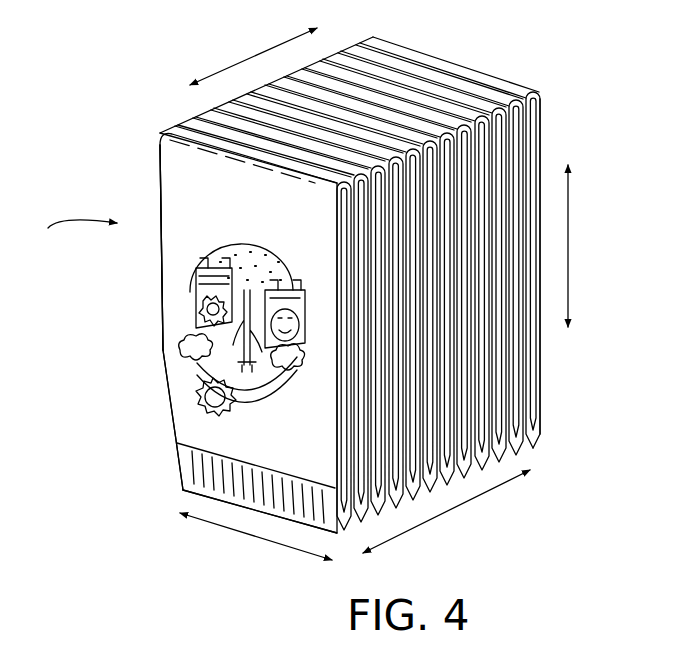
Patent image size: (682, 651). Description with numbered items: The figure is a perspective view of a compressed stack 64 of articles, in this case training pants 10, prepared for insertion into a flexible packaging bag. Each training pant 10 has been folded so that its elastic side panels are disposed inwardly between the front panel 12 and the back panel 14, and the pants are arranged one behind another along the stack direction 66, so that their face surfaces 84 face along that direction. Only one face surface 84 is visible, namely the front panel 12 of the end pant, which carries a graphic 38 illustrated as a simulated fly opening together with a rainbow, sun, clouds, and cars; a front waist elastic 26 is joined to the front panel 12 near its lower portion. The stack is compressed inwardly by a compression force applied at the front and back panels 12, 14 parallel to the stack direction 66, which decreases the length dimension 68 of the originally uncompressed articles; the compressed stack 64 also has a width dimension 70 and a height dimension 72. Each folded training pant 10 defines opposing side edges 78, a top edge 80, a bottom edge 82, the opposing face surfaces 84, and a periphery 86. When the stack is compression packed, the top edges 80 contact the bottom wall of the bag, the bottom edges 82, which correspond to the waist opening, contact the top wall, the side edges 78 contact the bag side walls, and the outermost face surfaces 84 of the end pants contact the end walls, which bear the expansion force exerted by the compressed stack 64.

The training pant 10 is at (530, 140).
The front panel 12 is at (177, 253).
The back panel 14 is at (542, 100).
The front waist elastic 26 is at (183, 466).
The graphic 38 is at (232, 226).
The compressed stack 64 is at (75, 243).
The stack direction 66 is at (250, 55).
The length dimension 68 is at (457, 507).
The width dimension 70 is at (253, 538).
The height dimension 72 is at (570, 238).
The side edges 78 is at (158, 170).
The top edge 80 is at (475, 80).
The bottom edge 82 is at (183, 492).
The face surfaces 84 is at (177, 377).
The periphery 86 is at (157, 338).